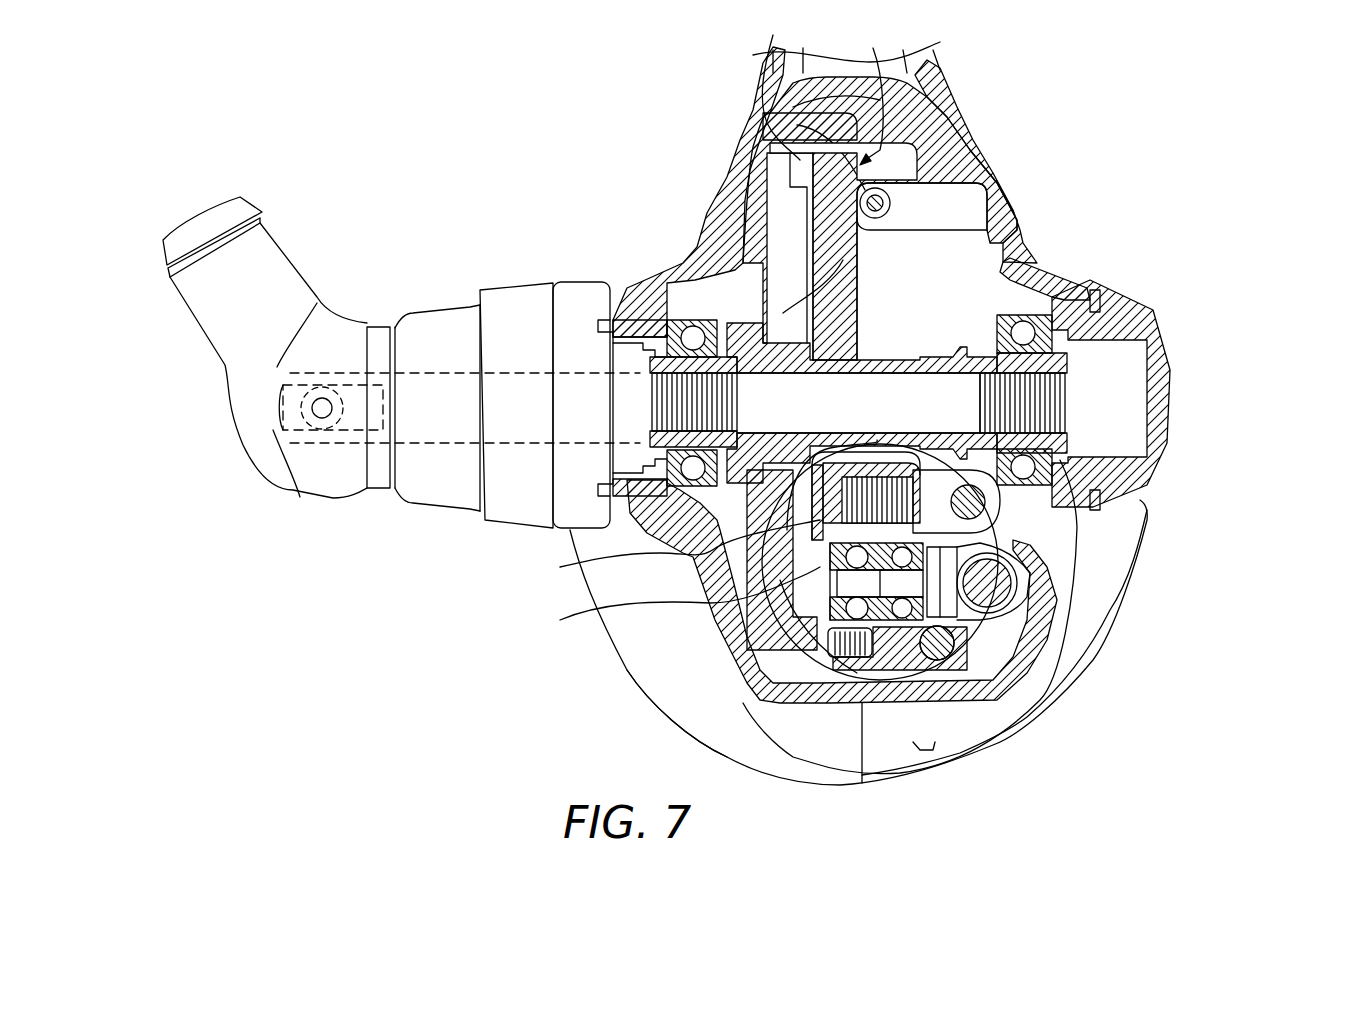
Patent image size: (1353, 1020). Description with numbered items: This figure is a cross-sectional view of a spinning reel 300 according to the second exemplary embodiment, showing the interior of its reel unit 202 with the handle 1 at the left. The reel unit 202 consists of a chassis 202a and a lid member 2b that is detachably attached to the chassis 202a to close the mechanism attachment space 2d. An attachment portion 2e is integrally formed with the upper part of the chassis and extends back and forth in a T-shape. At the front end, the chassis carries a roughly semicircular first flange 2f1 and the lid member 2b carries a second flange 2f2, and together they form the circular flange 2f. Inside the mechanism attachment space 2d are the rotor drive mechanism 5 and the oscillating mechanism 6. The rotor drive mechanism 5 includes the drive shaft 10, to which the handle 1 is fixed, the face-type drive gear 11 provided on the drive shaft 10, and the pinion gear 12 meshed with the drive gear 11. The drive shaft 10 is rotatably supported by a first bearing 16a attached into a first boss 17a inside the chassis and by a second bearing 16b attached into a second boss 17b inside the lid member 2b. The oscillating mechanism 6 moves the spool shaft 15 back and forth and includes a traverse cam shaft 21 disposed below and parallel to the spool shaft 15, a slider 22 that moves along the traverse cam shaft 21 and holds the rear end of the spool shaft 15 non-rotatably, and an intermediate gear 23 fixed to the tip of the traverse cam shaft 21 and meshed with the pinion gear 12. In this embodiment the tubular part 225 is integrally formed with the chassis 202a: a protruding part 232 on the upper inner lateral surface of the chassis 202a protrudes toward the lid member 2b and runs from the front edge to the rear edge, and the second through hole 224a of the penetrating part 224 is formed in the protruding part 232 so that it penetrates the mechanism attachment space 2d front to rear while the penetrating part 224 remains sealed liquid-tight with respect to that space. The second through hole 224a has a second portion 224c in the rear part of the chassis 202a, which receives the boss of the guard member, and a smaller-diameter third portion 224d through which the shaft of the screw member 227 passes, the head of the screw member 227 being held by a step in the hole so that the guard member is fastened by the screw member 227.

The handle 1 is at (195, 190).
The spinning reel 300 is at (588, 151).
The tubular part 225 is at (770, 83).
The protruding part 232 is at (871, 94).
The attachment portion 2e is at (940, 62).
The second portion 224c is at (770, 150).
The lid member 2b is at (705, 196).
The third portion 224d is at (780, 185).
The second boss 17b is at (690, 275).
The second bearing 16b is at (645, 284).
The screw member 227 is at (890, 188).
The mechanism attachment space 2d is at (1023, 160).
The penetrating part 224 is at (930, 200).
The reel unit 202 is at (1115, 152).
The chassis 202a is at (1018, 224).
The first boss 17a is at (1050, 262).
The first bearing 16a is at (1100, 292).
The drive gear 11 is at (821, 248).
The drive shaft 10 is at (830, 357).
The second through hole 224a is at (935, 302).
The rotor drive mechanism 5 is at (960, 320).
The pinion gear 12 is at (560, 567).
The spool shaft 15 is at (560, 620).
The flange 2f is at (604, 668).
The second flange 2f2 is at (680, 687).
The slider 22 is at (830, 680).
The oscillating mechanism 6 is at (1023, 617).
The traverse cam shaft 21 is at (1005, 640).
The intermediate gear 23 is at (1005, 590).
The first flange 2f1 is at (1140, 513).